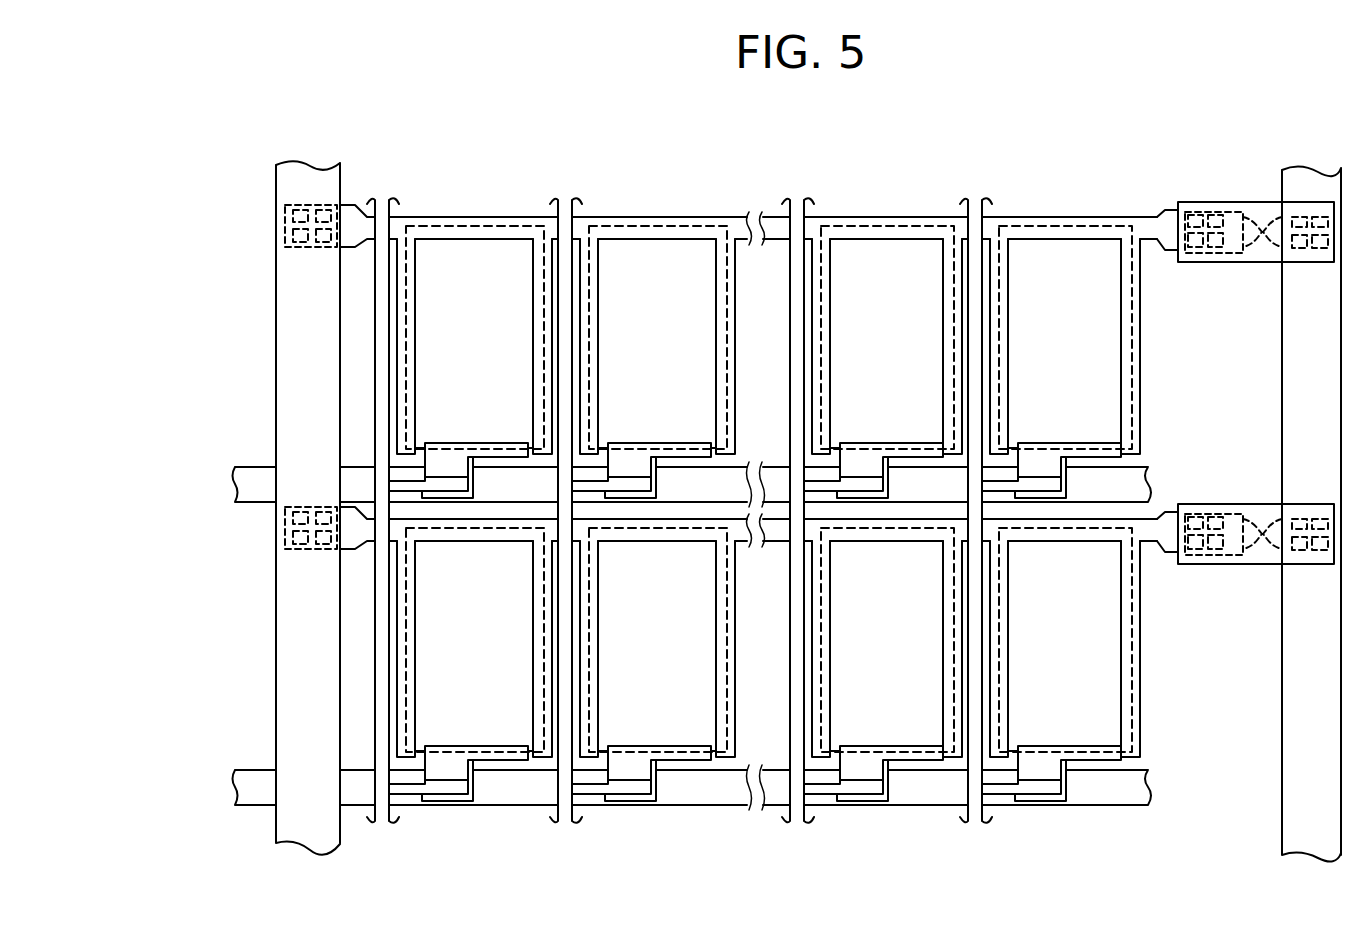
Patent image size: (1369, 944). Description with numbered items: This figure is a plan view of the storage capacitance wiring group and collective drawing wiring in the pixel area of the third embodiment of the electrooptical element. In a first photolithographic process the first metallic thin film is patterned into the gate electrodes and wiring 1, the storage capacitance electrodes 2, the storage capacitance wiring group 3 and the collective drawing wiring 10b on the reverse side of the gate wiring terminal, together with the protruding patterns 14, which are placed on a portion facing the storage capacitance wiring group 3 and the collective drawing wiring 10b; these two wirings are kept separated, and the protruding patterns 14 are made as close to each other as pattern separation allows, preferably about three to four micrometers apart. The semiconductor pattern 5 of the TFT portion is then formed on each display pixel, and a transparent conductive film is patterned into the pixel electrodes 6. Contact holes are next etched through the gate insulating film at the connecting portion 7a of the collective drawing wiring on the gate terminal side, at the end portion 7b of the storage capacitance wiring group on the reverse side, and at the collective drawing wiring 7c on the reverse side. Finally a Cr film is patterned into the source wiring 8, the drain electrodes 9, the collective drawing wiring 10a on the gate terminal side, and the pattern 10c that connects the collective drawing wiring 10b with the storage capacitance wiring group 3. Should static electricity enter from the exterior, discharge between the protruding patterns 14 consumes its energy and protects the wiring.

The gate electrodes and wiring 1 is at (697, 790).
The storage capacitance electrodes 2 is at (530, 650).
The storage capacitance wiring group 3 is at (868, 232).
The semiconductor pattern 5 is at (1062, 780).
The pixel electrodes 6 is at (650, 268).
The connecting portion of the collective drawing wiring 7a is at (302, 216).
The end portion of the storage capacitance wiring group 7b is at (1194, 522).
The collective drawing wiring contact hole 7c is at (1306, 242).
The source wiring 8 is at (1000, 205).
The drain electrodes 9 is at (860, 765).
The collective drawing wiring on the gate terminal side 10a is at (295, 710).
The collective drawing wiring on the reverse side of the gate terminal 10b is at (1280, 795).
The connecting pattern 10c is at (1262, 565).
The protruding patterns 14 is at (1272, 205).